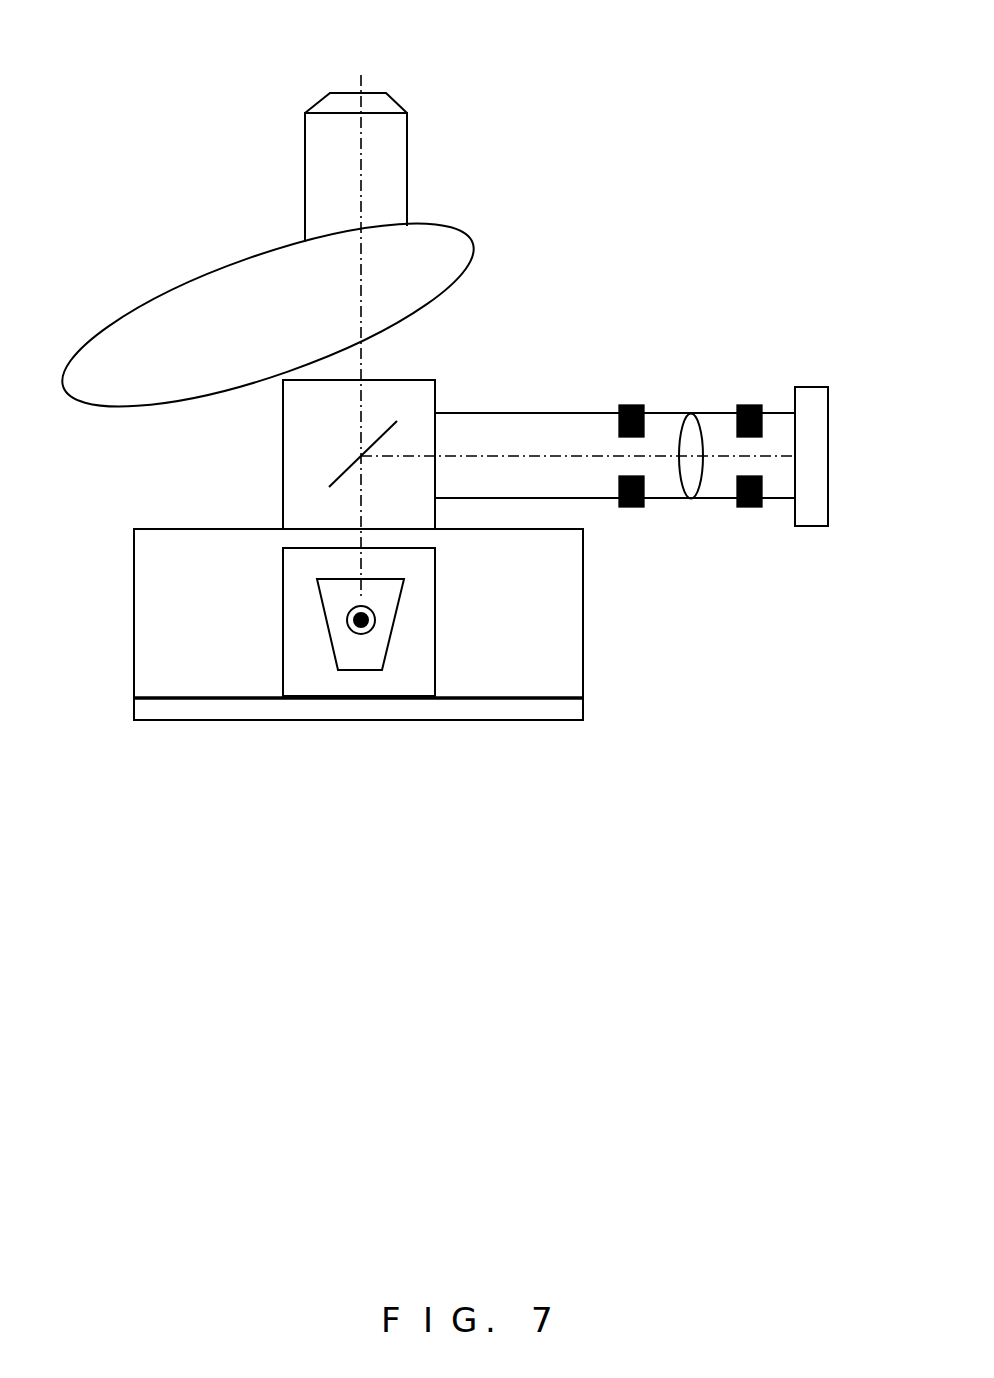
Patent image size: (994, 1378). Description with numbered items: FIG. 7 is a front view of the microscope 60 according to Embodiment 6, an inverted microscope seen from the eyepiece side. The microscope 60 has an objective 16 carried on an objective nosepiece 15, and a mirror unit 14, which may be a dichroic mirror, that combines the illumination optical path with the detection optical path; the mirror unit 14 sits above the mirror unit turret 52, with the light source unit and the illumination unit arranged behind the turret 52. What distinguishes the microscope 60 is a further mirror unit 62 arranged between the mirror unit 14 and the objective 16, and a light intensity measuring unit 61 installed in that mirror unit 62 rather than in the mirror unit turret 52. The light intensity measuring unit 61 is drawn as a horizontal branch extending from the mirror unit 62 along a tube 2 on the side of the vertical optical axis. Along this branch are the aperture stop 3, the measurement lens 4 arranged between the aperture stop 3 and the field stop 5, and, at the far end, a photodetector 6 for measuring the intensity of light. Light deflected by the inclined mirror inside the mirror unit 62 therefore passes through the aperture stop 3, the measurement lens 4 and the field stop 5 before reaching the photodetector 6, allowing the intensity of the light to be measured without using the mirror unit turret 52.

The microscope 60 is at (816, 47).
The light intensity measuring unit 61 is at (806, 328).
The mirror unit 62 is at (283, 487).
The objective 16 is at (407, 160).
The objective nosepiece 15 is at (473, 245).
The tube 2 is at (536, 413).
The aperture stop 3 is at (632, 508).
The measurement lens 4 is at (688, 499).
The field stop 5 is at (750, 508).
The photodetector 6 is at (820, 463).
The mirror unit 14 is at (435, 637).
The mirror unit turret 52 is at (352, 724).